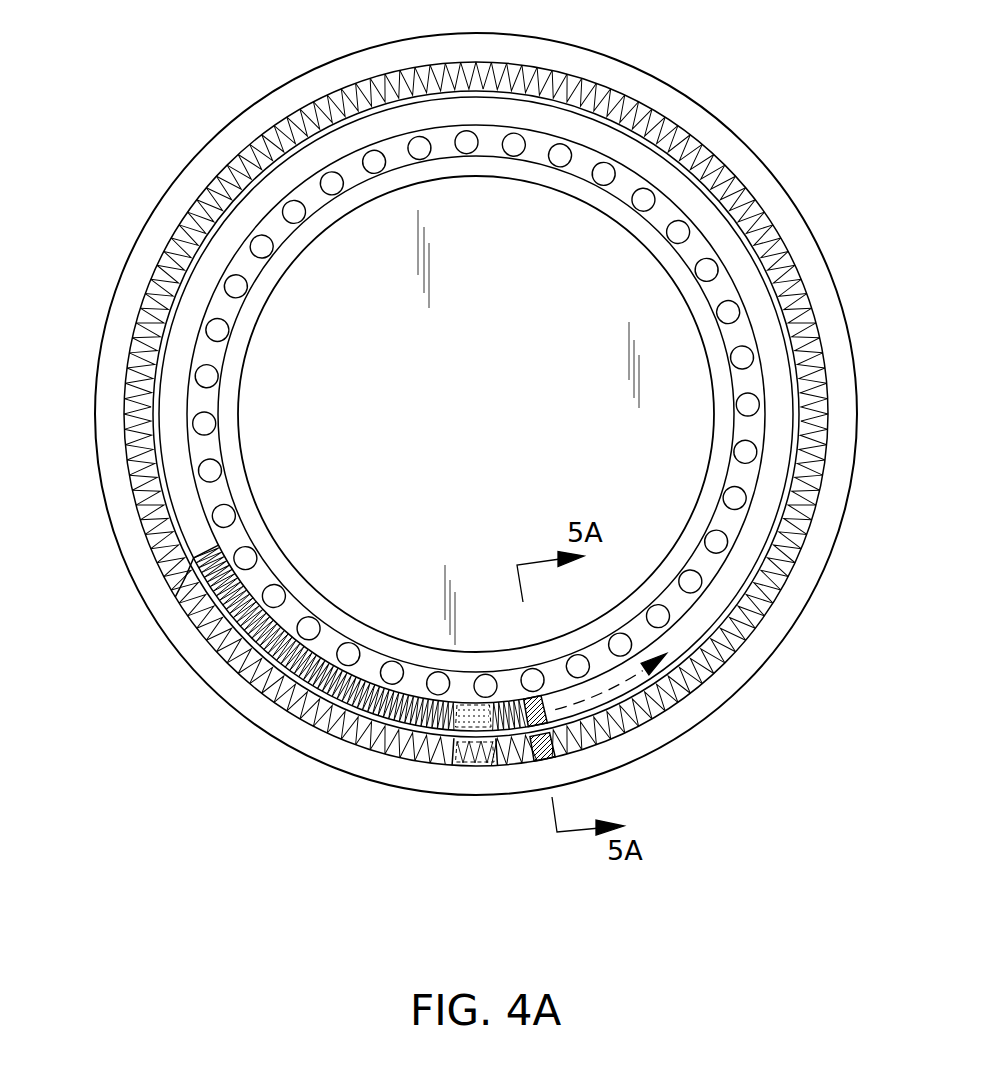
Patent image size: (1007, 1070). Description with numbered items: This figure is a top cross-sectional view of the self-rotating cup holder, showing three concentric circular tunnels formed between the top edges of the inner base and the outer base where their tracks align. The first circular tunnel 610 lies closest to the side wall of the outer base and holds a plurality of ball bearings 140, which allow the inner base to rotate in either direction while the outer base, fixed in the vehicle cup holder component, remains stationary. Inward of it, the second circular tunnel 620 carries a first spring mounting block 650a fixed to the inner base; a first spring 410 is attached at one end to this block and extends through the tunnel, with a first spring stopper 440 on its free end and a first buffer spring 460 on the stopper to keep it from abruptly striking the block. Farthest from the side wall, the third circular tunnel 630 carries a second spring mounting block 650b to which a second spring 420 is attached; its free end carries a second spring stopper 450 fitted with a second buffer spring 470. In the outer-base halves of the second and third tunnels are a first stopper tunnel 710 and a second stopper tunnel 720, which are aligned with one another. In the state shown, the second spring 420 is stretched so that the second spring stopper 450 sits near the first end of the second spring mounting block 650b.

The ball bearings 140 is at (257, 243).
The first spring 410 is at (257, 640).
The second spring 420 is at (300, 712).
The first spring stopper 440 is at (215, 550).
The second spring stopper 450 is at (497, 768).
The first buffer spring 460 is at (190, 538).
The second buffer spring 470 is at (518, 760).
The first circular tunnel 610 is at (353, 167).
The second circular tunnel 620 is at (200, 275).
The third circular tunnel 630 is at (250, 143).
The first spring mounting block 650a is at (547, 712).
The second spring mounting block 650b is at (553, 748).
The first stopper tunnel 710 is at (462, 728).
The second stopper tunnel 720 is at (457, 765).